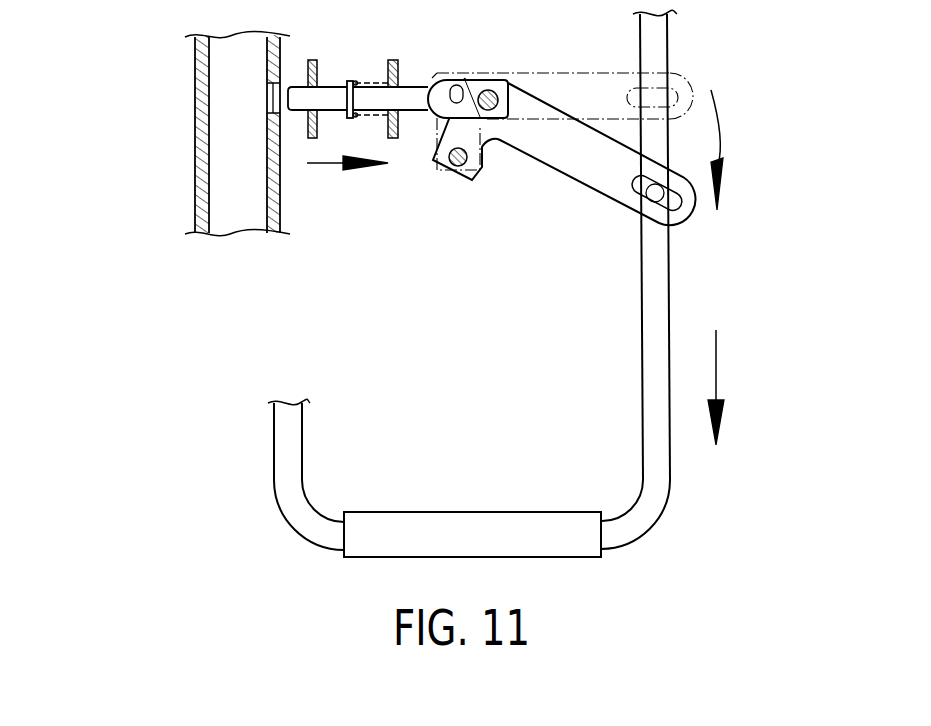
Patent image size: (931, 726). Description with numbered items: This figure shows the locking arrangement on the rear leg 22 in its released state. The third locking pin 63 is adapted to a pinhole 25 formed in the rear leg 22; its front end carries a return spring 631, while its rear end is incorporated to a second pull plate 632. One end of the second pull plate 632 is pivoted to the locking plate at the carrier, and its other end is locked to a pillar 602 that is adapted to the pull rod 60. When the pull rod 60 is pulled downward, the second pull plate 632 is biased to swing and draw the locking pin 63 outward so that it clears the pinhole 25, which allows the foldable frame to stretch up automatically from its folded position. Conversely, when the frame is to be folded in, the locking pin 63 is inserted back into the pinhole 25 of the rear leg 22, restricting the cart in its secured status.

The rear leg 22 is at (197, 180).
The pinhole 25 is at (270, 100).
The third locking pin 63 is at (328, 104).
The return spring 631 is at (353, 117).
The second pull plate 632 is at (582, 163).
The pillar 602 is at (695, 217).
The pull rod 60 is at (650, 375).